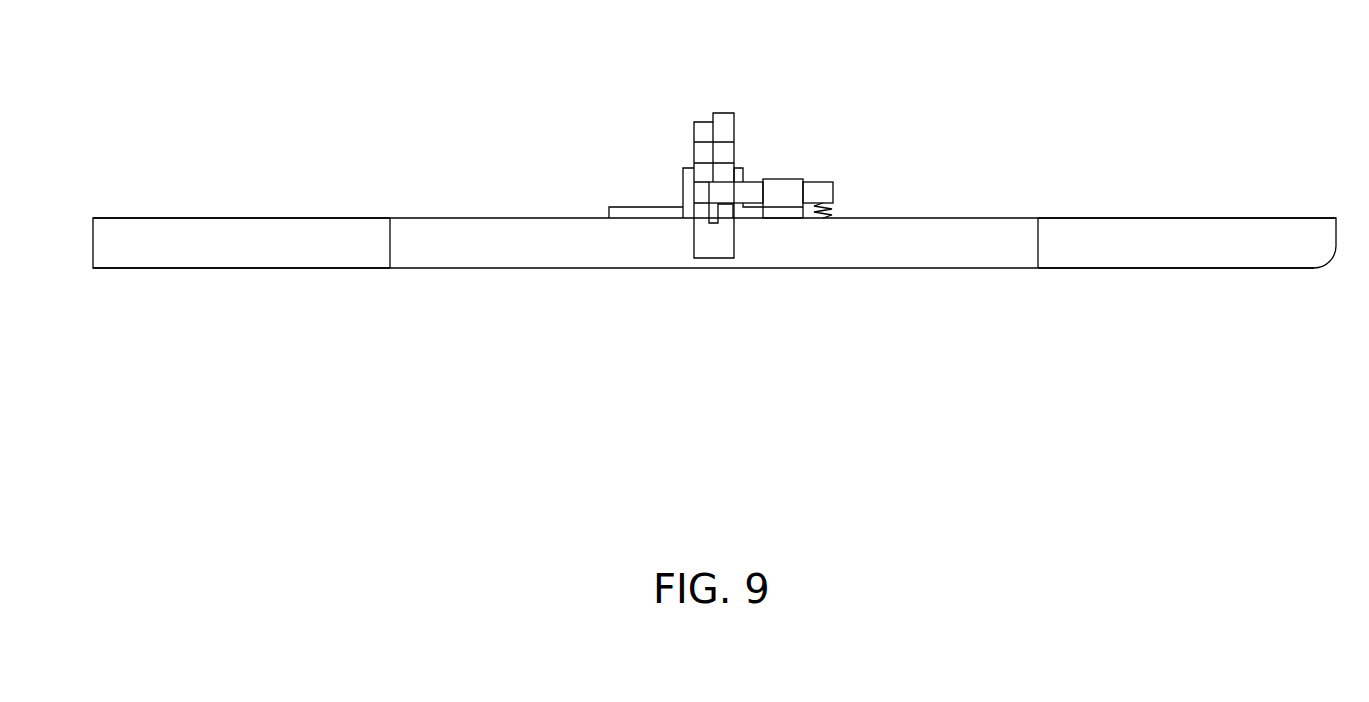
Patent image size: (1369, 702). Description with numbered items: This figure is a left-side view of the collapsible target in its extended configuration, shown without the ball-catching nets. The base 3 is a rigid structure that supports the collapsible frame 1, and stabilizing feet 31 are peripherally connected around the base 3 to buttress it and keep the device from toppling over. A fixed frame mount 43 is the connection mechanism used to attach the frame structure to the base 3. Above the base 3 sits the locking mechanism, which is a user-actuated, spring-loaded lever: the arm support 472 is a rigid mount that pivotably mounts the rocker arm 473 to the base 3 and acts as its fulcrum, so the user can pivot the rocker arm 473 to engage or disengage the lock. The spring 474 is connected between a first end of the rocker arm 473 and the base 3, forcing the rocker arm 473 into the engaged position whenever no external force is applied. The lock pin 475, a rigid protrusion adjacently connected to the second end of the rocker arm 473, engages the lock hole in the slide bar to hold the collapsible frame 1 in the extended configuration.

The collapsible frame 1 is at (678, 122).
The base 3 is at (990, 228).
The stabilizing foot 31 is at (265, 228).
The fixed frame mount 43 is at (645, 212).
The arm support 472 is at (773, 183).
The rocker arm 473 is at (823, 188).
The spring 474 is at (837, 207).
The lock pin 475 is at (712, 222).